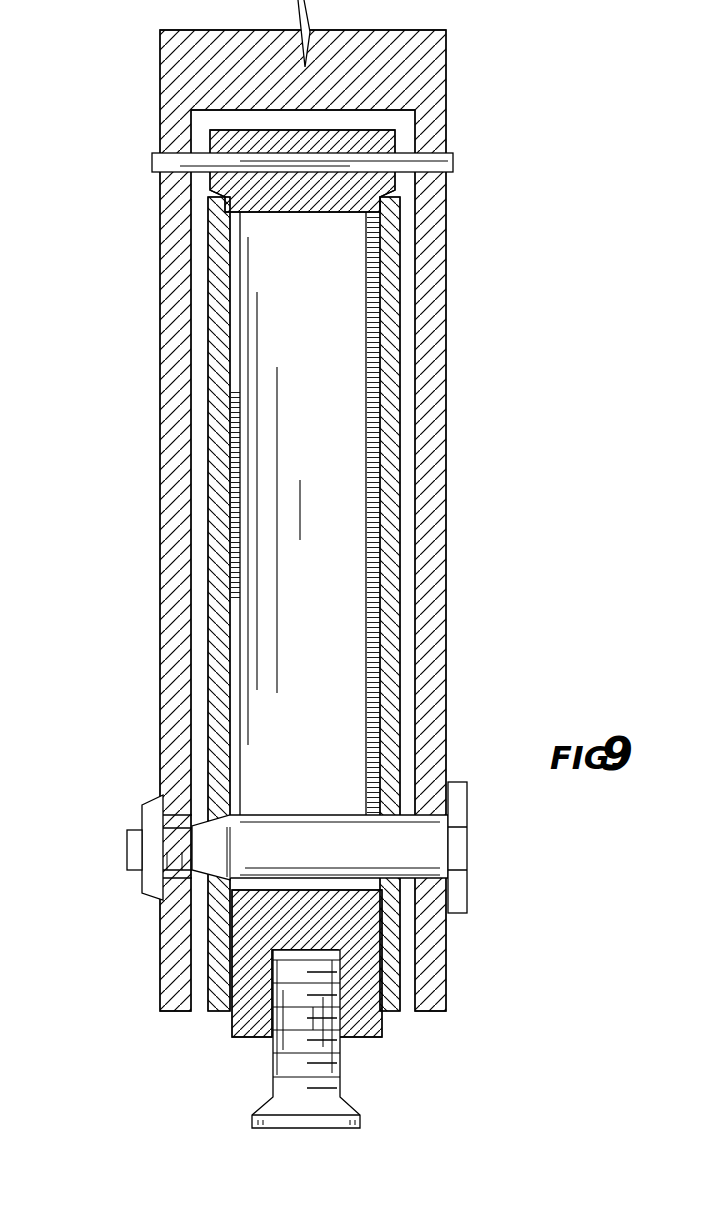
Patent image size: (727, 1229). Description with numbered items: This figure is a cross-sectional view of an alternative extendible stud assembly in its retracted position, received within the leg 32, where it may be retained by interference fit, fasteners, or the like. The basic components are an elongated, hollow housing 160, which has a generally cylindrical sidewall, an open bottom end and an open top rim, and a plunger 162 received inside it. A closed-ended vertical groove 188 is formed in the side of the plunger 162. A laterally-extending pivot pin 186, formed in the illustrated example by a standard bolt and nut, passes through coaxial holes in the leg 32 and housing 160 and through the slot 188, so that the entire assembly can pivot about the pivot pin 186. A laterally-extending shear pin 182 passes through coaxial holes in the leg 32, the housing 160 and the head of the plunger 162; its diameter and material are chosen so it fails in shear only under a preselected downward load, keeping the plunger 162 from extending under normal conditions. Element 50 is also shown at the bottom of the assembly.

The leg 32 is at (430, 65).
The shear pin 182 is at (455, 158).
The housing 160 is at (382, 342).
The plunger 162 is at (341, 497).
The vertical groove 188 is at (235, 392).
The pivot pin 186 is at (430, 848).
The vial 50 is at (340, 1102).